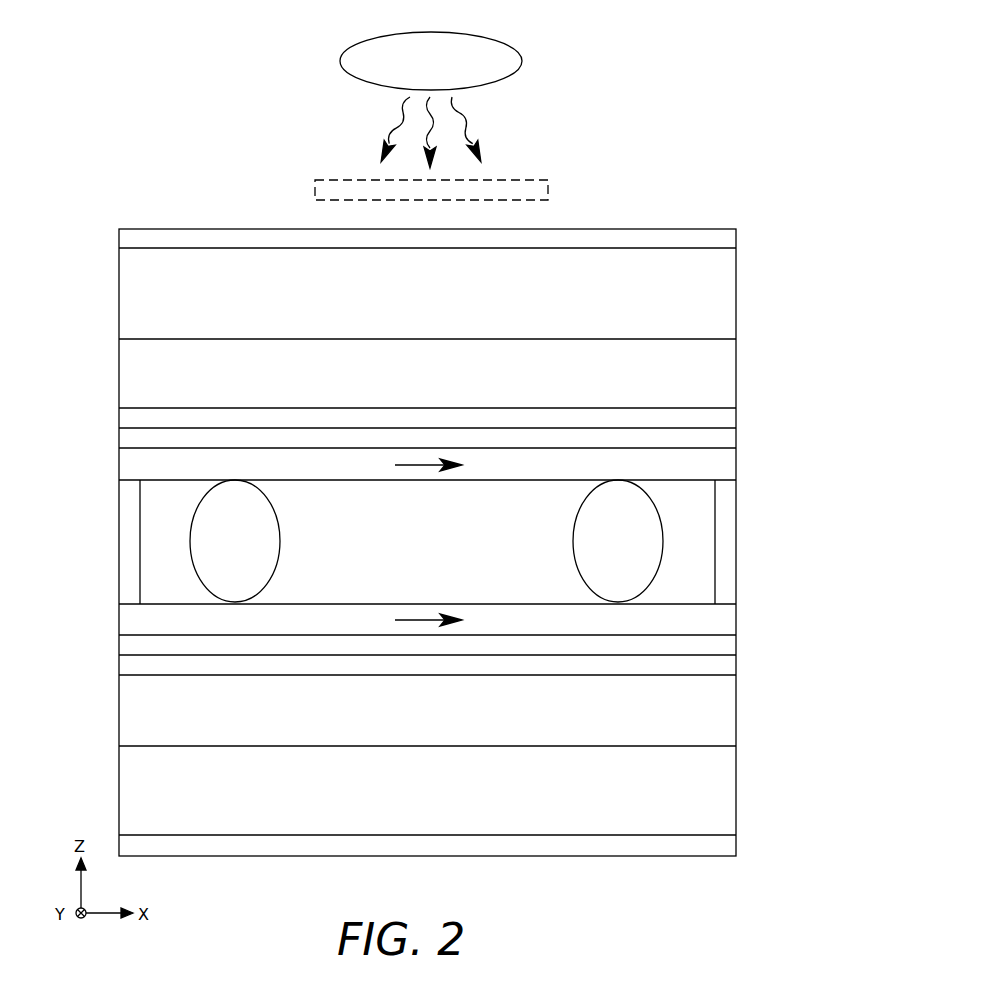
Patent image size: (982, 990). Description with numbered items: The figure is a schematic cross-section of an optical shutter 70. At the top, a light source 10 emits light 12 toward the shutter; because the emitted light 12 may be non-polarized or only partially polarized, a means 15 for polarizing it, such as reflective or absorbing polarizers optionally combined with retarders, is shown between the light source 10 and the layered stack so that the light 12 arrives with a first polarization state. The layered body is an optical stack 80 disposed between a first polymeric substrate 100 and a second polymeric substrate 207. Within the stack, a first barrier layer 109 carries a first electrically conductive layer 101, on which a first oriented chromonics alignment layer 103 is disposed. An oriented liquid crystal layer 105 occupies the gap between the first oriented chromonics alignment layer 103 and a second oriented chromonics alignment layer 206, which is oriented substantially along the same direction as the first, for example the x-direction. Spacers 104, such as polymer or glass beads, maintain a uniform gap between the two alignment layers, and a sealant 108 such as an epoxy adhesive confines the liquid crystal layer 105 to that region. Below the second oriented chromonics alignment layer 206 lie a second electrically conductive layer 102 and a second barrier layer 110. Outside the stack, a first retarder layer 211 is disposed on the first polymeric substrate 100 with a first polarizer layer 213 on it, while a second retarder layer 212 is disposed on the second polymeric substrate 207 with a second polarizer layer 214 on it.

The light source 10 is at (482, 34).
The polarized light 12 is at (463, 125).
The means for polarizing 15 is at (538, 190).
The optical shutter 70 is at (139, 146).
The optical stack 80 is at (72, 407).
The first polymeric substrate 100 is at (731, 358).
The first electrically conductive layer 101 is at (731, 438).
The second electrically conductive layer 102 is at (731, 643).
The first oriented chromonics alignment layer 103 is at (731, 470).
The spacers 104 is at (663, 525).
The oriented liquid crystal layer 105 is at (695, 582).
The sealant 108 is at (731, 550).
The first barrier layer 109 is at (731, 416).
The second barrier layer 110 is at (731, 666).
The second oriented chromonics alignment layer 206 is at (731, 612).
The second polymeric substrate 207 is at (731, 718).
The first retarder layer 211 is at (731, 301).
The second retarder layer 212 is at (731, 797).
The first polarizer layer 213 is at (731, 236).
The second polarizer layer 214 is at (731, 847).